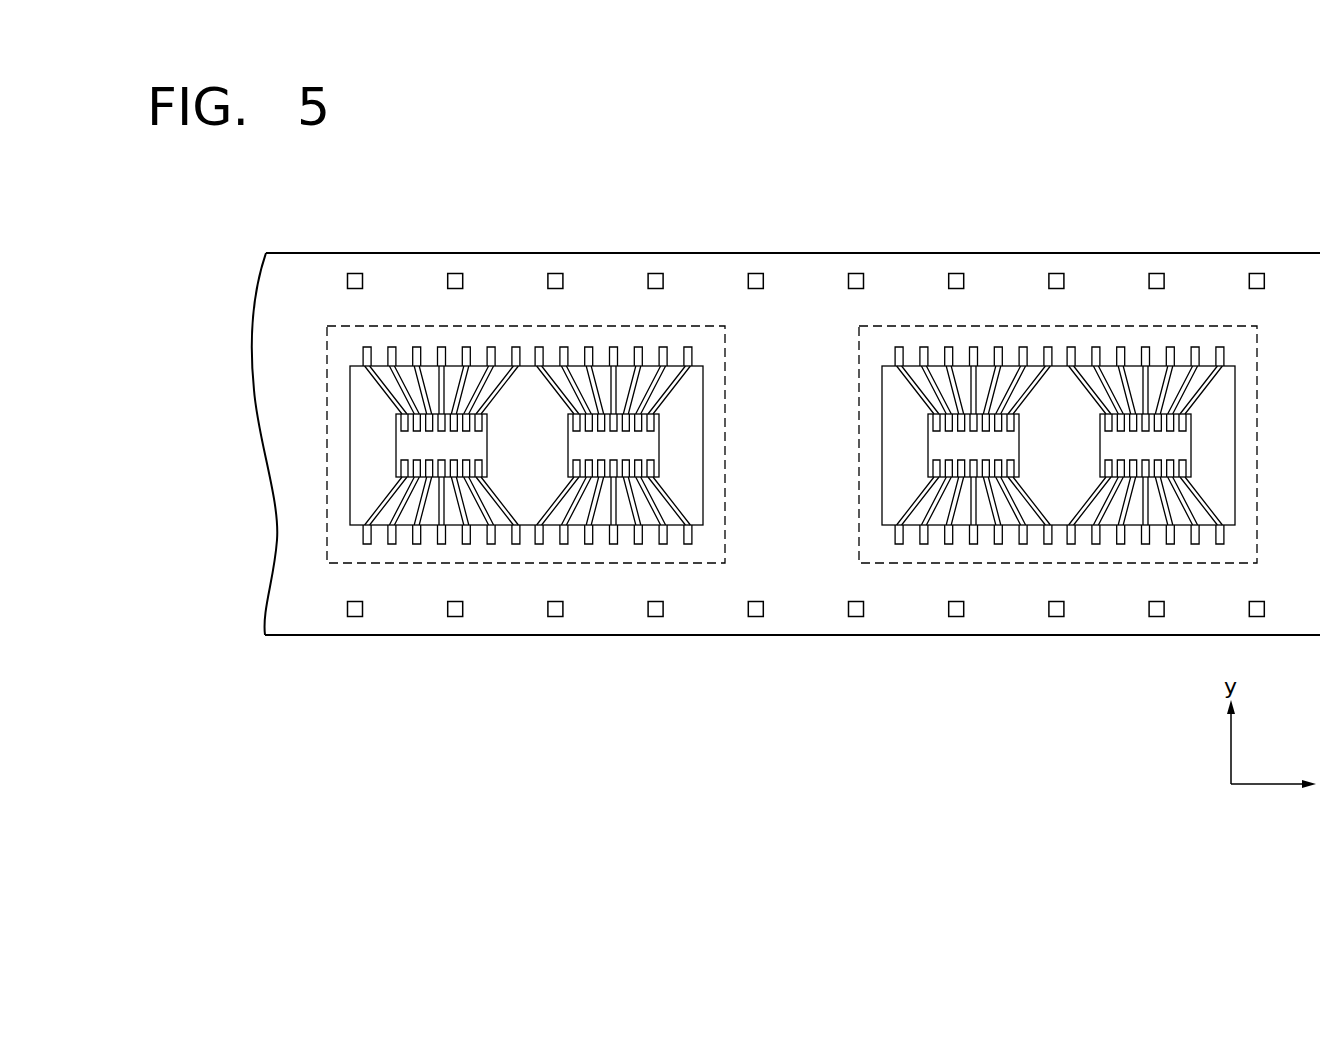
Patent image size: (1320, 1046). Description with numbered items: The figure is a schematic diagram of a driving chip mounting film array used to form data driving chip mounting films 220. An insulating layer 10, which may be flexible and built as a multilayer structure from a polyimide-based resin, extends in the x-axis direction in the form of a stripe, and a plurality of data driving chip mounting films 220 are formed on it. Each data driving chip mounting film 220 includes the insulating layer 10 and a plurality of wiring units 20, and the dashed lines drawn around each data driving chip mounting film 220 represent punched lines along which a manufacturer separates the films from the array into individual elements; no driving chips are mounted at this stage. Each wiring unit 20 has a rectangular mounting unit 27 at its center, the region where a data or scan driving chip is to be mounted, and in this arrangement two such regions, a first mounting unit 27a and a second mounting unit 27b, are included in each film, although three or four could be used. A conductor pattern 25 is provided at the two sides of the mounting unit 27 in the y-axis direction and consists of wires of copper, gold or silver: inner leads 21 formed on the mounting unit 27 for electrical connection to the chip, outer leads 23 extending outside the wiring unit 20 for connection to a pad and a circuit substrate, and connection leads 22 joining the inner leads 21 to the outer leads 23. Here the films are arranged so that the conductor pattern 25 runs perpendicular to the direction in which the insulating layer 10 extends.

The insulating layer 10 is at (622, 282).
The wiring unit 20 is at (704, 446).
The inner leads 21 is at (660, 415).
The connection leads 22 is at (678, 379).
The outer leads 23 is at (688, 354).
The conductor pattern 25 is at (780, 338).
The mounting unit 27 is at (166, 425).
The first mounting unit 27a is at (568, 445).
The second mounting unit 27b is at (396, 443).
The data driving chip mounting film 220 is at (537, 582).